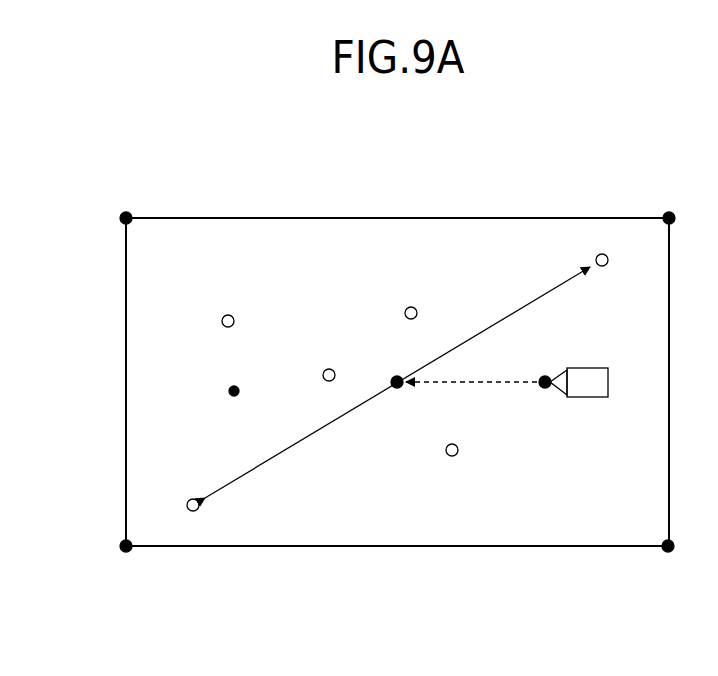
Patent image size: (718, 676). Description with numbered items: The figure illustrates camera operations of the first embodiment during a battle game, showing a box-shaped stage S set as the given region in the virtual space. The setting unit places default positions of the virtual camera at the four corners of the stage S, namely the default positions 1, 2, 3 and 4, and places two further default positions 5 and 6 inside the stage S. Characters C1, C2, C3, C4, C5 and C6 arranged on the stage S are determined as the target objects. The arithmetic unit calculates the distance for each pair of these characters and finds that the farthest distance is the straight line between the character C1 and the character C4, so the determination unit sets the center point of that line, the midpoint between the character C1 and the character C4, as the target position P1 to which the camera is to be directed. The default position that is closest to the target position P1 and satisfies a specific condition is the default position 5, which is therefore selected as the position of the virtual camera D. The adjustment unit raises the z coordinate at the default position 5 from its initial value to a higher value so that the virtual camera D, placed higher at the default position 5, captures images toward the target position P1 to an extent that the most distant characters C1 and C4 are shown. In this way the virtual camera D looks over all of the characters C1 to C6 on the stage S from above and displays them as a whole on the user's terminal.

The stage S is at (402, 214).
The default position 1 is at (115, 220).
The default position 2 is at (115, 547).
The default position 3 is at (679, 547).
The default position 4 is at (679, 220).
The default position 5 is at (545, 392).
The default position 6 is at (223, 391).
The character C1 is at (194, 498).
The character C2 is at (330, 368).
The character C3 is at (228, 314).
The character C4 is at (596, 256).
The character C5 is at (411, 306).
The character C6 is at (452, 457).
The target position P1 is at (397, 396).
The virtual camera D is at (598, 367).